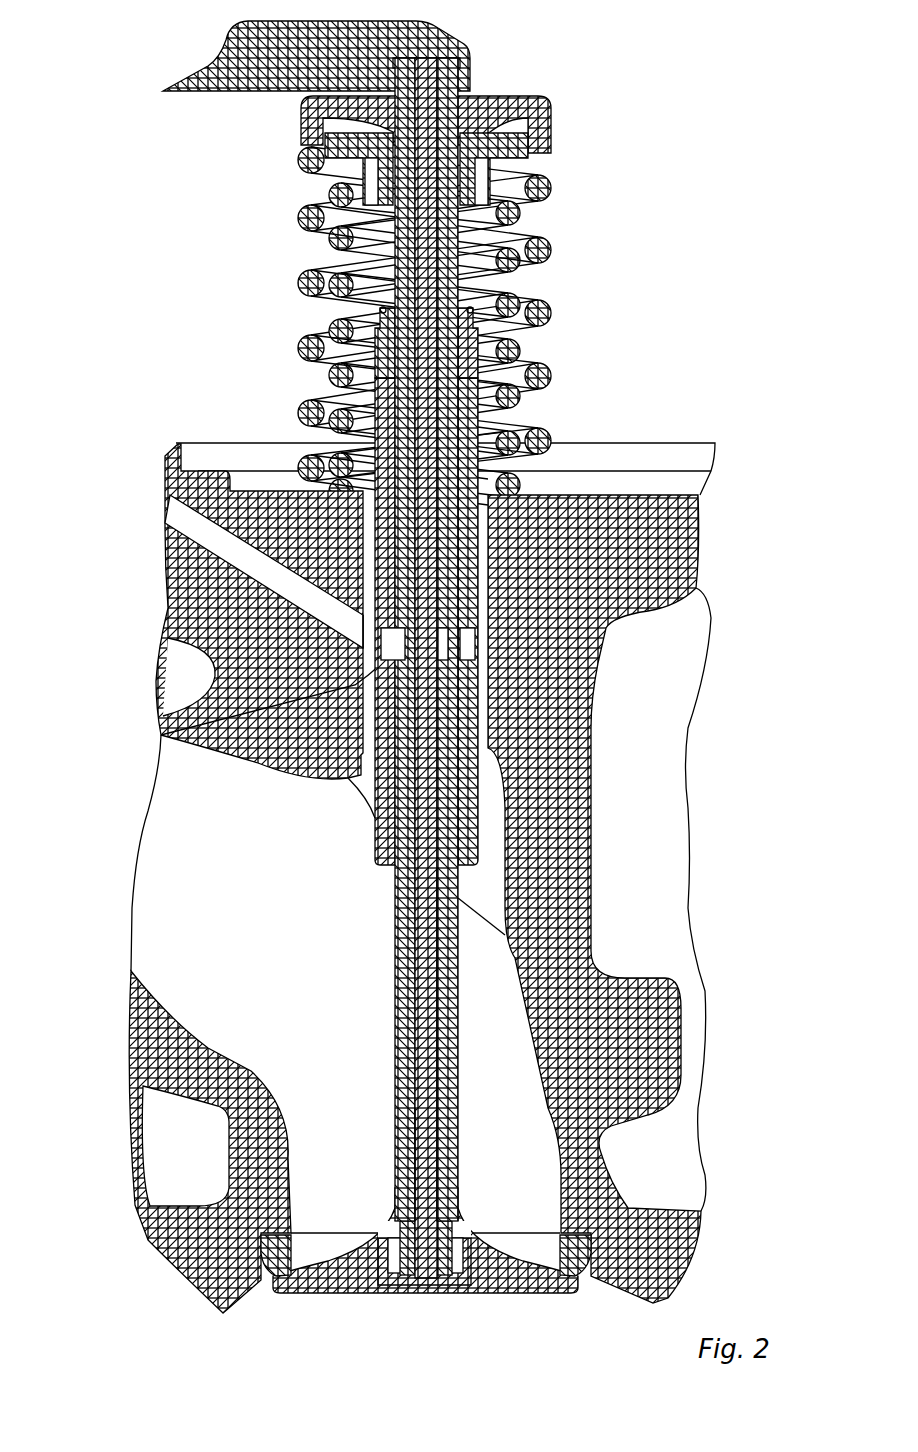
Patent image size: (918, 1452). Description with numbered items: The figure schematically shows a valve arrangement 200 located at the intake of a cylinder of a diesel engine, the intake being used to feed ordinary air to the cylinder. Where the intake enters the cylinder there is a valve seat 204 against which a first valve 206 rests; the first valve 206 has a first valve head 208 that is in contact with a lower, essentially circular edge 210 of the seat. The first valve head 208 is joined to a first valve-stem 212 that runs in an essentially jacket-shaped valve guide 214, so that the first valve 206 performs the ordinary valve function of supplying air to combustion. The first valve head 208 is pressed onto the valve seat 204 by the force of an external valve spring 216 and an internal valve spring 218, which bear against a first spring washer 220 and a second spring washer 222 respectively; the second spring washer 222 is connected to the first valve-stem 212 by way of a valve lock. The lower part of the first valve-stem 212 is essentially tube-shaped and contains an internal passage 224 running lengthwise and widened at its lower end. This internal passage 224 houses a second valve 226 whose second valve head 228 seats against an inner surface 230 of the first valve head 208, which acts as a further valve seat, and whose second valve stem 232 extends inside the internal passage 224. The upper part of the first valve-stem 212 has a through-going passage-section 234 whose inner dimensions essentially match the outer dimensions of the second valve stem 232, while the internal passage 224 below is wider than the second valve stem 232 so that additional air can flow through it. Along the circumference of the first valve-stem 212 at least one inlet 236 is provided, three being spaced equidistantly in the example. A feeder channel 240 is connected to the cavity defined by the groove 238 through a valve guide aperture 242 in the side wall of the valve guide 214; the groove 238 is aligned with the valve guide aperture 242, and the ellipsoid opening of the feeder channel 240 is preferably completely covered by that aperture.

The valve arrangement 200 is at (614, 58).
The valve seat 204 is at (565, 1268).
The first valve 206 is at (327, 1040).
The first valve head 208 is at (510, 1285).
The lower, essentially circular edge 210 is at (258, 1270).
The first valve-stem 212 is at (387, 960).
The valve guide 214 is at (470, 712).
The external valve spring 216 is at (540, 248).
The internal valve spring 218 is at (526, 352).
The first spring washer 220 is at (535, 96).
The second spring washer 222 is at (522, 160).
The internal passage 224 is at (430, 1050).
The second valve 226 is at (412, 922).
The second valve head 228 is at (447, 1278).
The inner surface 230 is at (365, 1278).
The second valve stem 232 is at (430, 1143).
The through-going passage-section 234 is at (437, 543).
The inlet 236 is at (383, 655).
The groove 238 is at (457, 640).
The feeder channel 240 is at (170, 507).
The valve guide aperture 242 is at (374, 624).